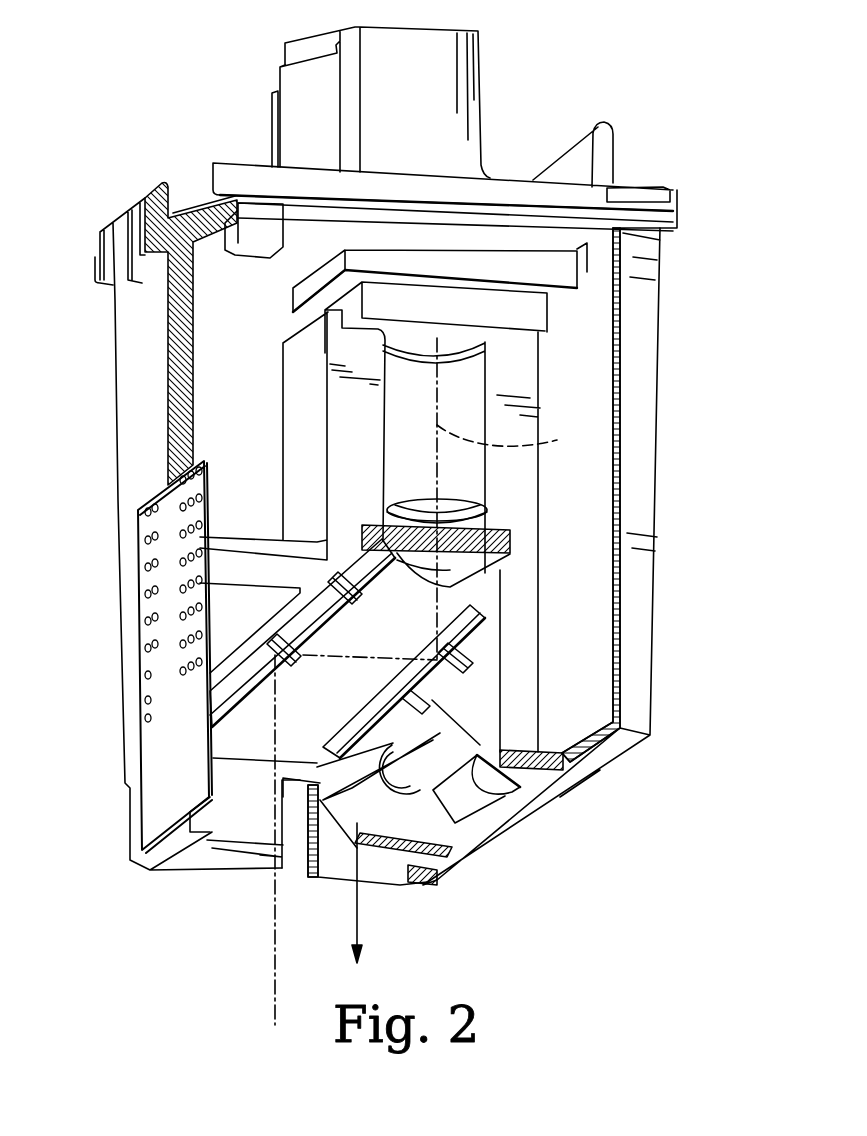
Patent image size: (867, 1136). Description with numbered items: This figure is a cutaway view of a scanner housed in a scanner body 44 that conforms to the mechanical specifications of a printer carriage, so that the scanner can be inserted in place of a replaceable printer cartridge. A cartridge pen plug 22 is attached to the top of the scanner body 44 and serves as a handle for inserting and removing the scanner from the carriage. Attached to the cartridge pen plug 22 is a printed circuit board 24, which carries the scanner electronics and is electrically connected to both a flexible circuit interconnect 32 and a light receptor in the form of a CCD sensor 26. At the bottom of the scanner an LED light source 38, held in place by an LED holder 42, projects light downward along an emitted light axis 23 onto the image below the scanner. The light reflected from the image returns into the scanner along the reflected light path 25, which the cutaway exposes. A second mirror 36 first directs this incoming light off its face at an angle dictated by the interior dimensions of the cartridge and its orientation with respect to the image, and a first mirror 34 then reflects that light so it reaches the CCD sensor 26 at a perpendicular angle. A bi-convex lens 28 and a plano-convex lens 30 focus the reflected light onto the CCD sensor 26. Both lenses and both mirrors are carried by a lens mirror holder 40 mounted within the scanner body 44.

The cartridge pen plug 22 is at (613, 133).
The emitted light axis 23 is at (360, 897).
The printed circuit board 24 is at (577, 285).
The reflected light path 25 is at (435, 681).
The CCD sensor 26 is at (535, 335).
The bi-convex lens 28 is at (488, 512).
The plano-convex lens 30 is at (497, 537).
The flexible circuit interconnect 32 is at (147, 677).
The first mirror 34 is at (540, 598).
The second mirror 36 is at (327, 580).
The LED light source 38 is at (498, 806).
The lens mirror holder 40 is at (247, 765).
The LED holder 42 is at (430, 880).
The scanner body 44 is at (663, 287).